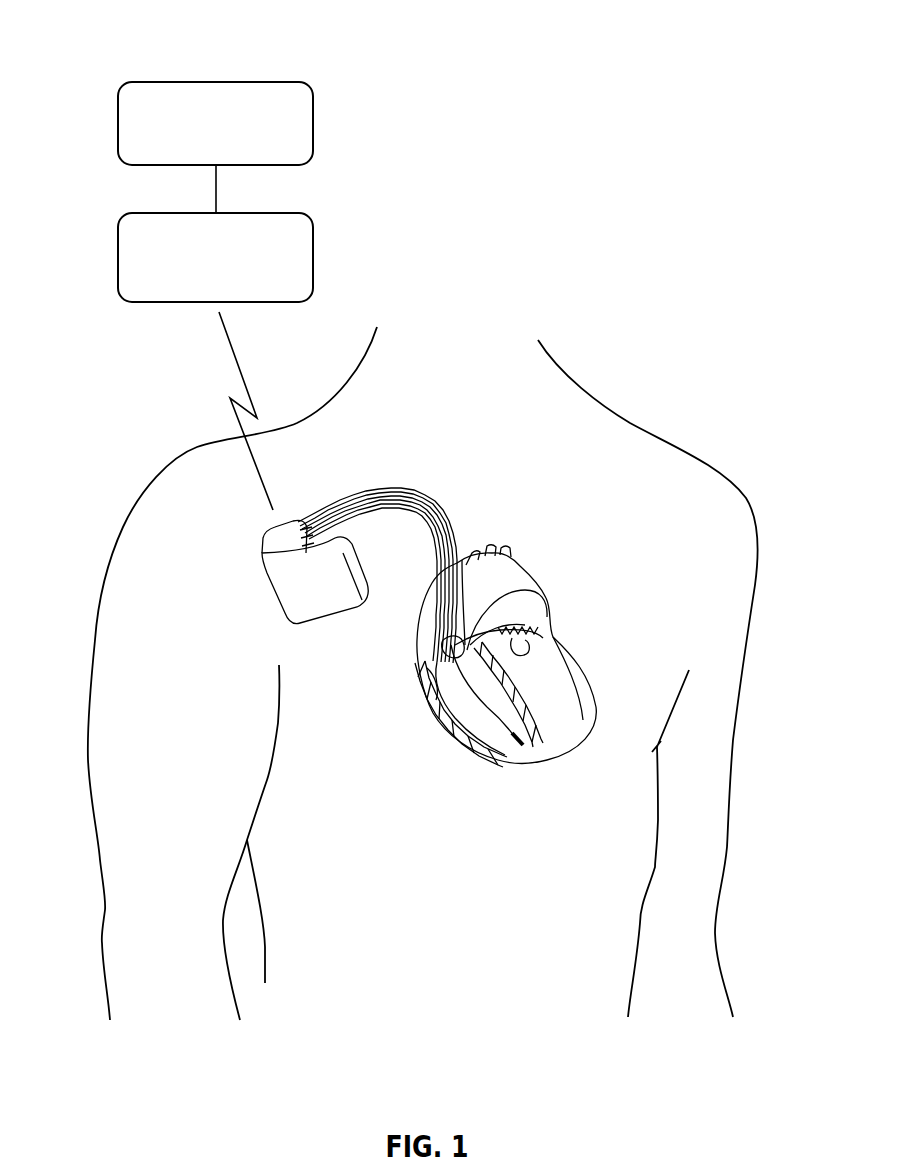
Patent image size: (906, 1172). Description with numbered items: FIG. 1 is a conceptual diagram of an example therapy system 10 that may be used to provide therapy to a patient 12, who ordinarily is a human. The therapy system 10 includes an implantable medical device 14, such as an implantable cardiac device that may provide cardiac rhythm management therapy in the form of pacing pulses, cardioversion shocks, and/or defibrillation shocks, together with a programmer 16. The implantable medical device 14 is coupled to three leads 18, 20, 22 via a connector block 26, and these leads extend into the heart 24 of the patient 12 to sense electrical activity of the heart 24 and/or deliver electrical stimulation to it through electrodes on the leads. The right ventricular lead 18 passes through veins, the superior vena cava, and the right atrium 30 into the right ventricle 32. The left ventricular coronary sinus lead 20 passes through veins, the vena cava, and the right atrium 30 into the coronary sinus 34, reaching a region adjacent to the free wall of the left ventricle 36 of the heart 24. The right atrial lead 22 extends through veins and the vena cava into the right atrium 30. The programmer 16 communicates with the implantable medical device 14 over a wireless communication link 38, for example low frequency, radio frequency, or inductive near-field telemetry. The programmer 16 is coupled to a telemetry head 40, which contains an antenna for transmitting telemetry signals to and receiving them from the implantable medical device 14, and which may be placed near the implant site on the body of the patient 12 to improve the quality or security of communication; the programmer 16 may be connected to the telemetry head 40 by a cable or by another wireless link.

The therapy system 10 is at (694, 72).
The patient 12 is at (632, 423).
The implantable medical device 14 is at (281, 567).
The programmer 16 is at (228, 149).
The right ventricular lead 18 is at (418, 520).
The left ventricular coronary sinus lead 20 is at (452, 530).
The right atrial lead 22 is at (422, 535).
The heart 24 is at (504, 688).
The connector block 26 is at (268, 550).
The right atrium 30 is at (427, 668).
The right ventricle 32 is at (453, 703).
The coronary sinus 34 is at (476, 640).
The left ventricle 36 is at (575, 685).
The wireless communication link 38 is at (228, 405).
The telemetry head 40 is at (228, 297).